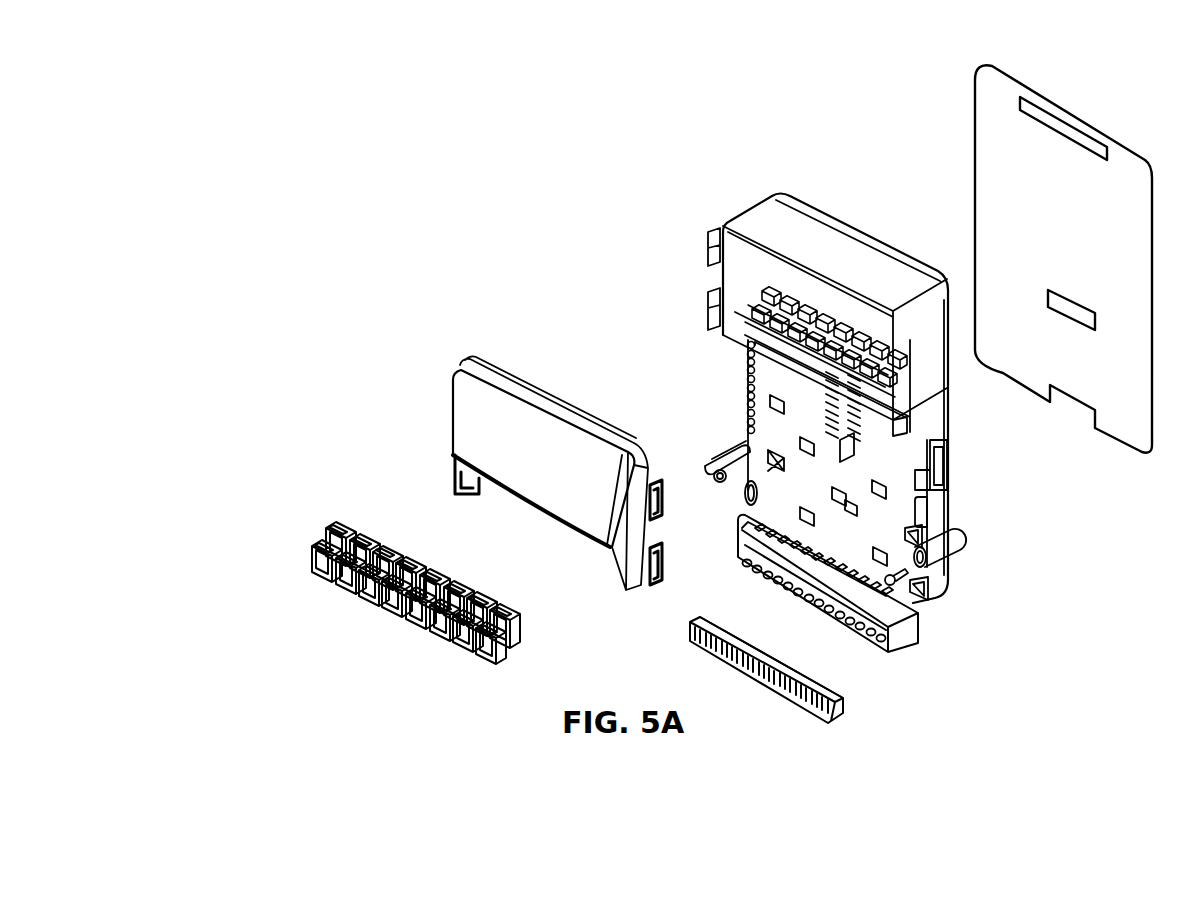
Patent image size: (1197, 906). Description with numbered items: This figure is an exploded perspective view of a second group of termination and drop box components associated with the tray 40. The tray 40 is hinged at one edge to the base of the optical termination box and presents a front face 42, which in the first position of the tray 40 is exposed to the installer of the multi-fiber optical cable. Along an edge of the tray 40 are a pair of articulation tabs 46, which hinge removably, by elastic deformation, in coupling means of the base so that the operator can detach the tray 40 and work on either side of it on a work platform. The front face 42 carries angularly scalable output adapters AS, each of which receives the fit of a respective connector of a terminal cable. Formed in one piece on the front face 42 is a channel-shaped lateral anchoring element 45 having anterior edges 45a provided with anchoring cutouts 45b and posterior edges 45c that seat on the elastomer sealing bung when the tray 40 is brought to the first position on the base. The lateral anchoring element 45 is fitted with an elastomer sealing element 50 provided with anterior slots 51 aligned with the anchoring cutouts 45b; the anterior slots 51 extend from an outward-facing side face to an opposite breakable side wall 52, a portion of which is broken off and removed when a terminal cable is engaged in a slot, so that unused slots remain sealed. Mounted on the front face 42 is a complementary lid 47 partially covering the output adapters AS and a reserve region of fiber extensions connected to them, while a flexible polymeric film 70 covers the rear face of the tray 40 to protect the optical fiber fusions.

The film 70 is at (966, 128).
The tray 40 is at (818, 454).
The angularly scalable output adapters AS is at (846, 330).
The articulation tabs 46 is at (708, 300).
The front face 42 is at (768, 370).
The complementary lid 47 is at (476, 416).
The lateral anchoring element 45 is at (855, 561).
The anterior edges 45a is at (734, 537).
The anchoring cutouts 45b is at (822, 565).
The posterior edges 45c is at (792, 525).
The elastomer sealing element 50 is at (705, 678).
The anterior slots 51 is at (737, 678).
The breakable side wall 52 is at (773, 656).